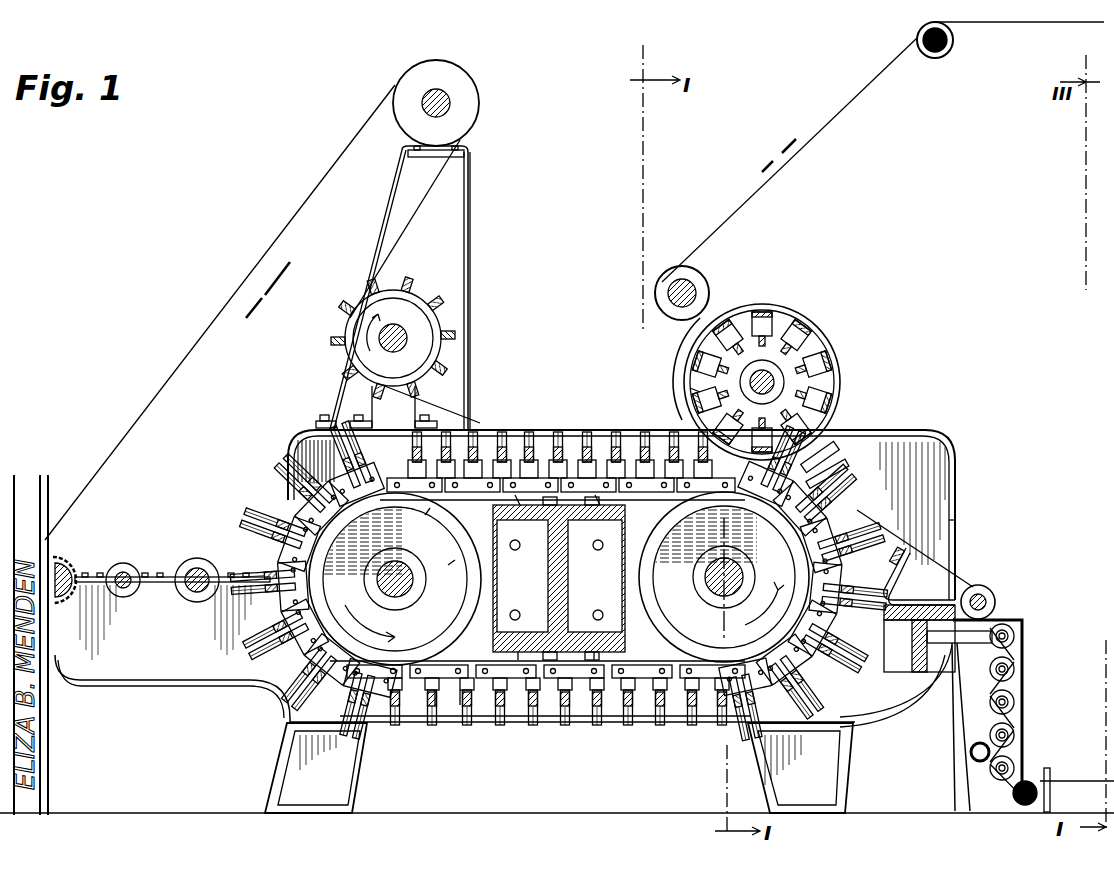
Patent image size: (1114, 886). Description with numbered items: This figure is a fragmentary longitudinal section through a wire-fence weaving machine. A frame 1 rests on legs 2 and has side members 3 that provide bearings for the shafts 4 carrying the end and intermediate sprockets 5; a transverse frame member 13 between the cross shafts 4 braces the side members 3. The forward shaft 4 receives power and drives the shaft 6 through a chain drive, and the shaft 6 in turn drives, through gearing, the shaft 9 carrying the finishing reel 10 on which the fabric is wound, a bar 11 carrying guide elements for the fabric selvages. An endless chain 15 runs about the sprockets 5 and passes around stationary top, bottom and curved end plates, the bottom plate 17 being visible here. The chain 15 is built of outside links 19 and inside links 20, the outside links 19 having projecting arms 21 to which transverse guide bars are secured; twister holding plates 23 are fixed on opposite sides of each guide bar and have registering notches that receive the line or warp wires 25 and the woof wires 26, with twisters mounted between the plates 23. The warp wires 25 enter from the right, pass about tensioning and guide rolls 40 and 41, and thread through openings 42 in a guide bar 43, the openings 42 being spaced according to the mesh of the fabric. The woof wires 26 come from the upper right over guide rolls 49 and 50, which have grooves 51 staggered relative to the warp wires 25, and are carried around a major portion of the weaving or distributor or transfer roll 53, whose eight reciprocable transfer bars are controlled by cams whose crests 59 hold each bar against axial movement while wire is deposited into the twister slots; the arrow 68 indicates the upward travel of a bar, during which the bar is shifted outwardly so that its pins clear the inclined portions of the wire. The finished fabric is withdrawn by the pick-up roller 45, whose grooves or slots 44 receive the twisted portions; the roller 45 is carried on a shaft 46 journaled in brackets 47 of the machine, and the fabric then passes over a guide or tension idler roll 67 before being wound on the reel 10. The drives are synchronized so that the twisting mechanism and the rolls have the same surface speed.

The frame 1 is at (955, 472).
The legs 2 is at (278, 763).
The side members 3 is at (956, 528).
The shafts 4 is at (414, 580).
The sprockets 5 is at (492, 515).
The shaft 6 is at (200, 570).
The shaft 9 is at (66, 592).
The finishing reel 10 is at (72, 566).
The bar 11 is at (130, 587).
The transverse frame member 13 is at (500, 620).
The endless chain 15 is at (254, 508).
The bottom plate 17 is at (655, 612).
The outside links 19 is at (412, 705).
The inside links 20 is at (455, 700).
The projecting arms 21 is at (458, 690).
The twister holding plates 23 is at (592, 440).
The line wires 25 is at (958, 583).
The woof wires 26 is at (820, 126).
The tensioning and guide rolls 40 is at (1014, 738).
The tensioning and guide rolls 41 is at (996, 600).
The openings 42 is at (890, 565).
The guide bar 43 is at (900, 552).
The grooves 44 is at (440, 354).
The pick-up roller 45 is at (424, 338).
The shaft 46 is at (400, 336).
The brackets 47 is at (372, 400).
The guide roll 49 is at (935, 58).
The guide roll 50 is at (701, 297).
The grooves 51 is at (953, 43).
The transfer roll 53 is at (818, 342).
The crest 59 is at (703, 278).
The guide or tension idler roll 67 is at (464, 102).
The arrow 68 is at (690, 390).